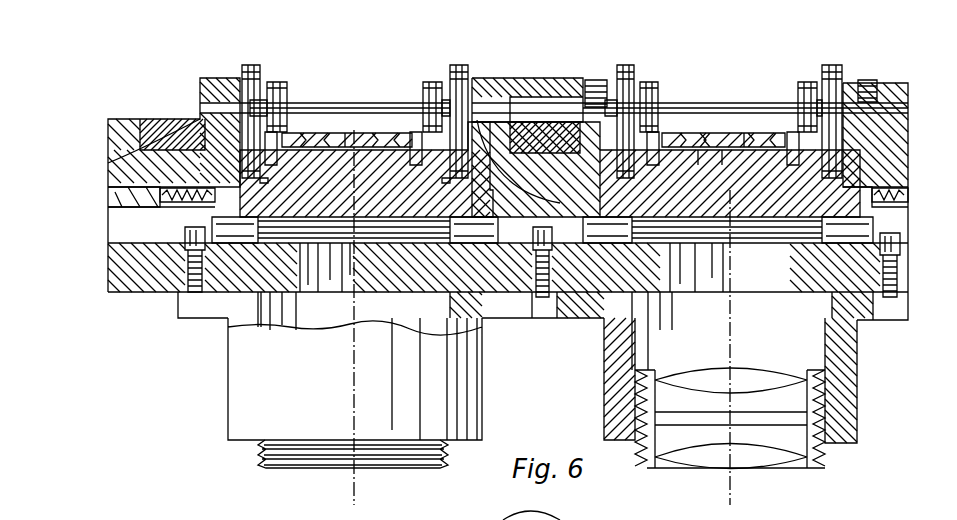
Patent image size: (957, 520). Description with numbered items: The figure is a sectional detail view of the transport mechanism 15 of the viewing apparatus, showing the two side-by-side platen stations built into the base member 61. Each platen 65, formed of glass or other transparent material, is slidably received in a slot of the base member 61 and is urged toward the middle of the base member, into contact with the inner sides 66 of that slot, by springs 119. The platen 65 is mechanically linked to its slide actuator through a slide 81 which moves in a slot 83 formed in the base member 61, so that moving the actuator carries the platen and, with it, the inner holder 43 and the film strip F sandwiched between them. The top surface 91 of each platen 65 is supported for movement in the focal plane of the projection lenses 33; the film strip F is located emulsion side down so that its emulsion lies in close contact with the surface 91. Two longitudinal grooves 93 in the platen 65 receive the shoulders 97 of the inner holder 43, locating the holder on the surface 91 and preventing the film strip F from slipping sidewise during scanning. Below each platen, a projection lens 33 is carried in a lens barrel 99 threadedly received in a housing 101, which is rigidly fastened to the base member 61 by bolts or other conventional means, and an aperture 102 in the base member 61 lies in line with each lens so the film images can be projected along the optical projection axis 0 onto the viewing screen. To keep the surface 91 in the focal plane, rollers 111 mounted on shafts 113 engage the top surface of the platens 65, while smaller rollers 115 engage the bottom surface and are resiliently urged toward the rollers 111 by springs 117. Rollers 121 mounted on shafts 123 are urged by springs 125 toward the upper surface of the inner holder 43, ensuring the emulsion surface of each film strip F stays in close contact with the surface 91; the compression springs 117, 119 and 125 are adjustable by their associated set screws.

The transport mechanism 15 is at (105, 131).
The projection lens 33 is at (740, 462).
The inner holder 43 is at (362, 140).
The base member 61 is at (114, 270).
The platen 65 is at (372, 165).
The inner side of slot 66 is at (225, 207).
The slide 81 is at (172, 128).
The slot 83 is at (110, 163).
The top surface of platen 91 is at (322, 133).
The groove 93 is at (300, 135).
The shoulder of inner holder 97 is at (672, 148).
The lens barrel 99 is at (432, 465).
The housing 101 is at (475, 379).
The aperture 102 is at (410, 283).
The roller 111 is at (245, 68).
The shaft 113 is at (207, 106).
The smaller roller 115 is at (245, 240).
The spring 117 is at (193, 262).
The spring 119 is at (193, 200).
The roller 121 is at (276, 83).
The shaft 123 is at (296, 101).
The spring 125 is at (592, 92).
The film strip F is at (347, 135).
The optical projection axis 0 is at (356, 492).